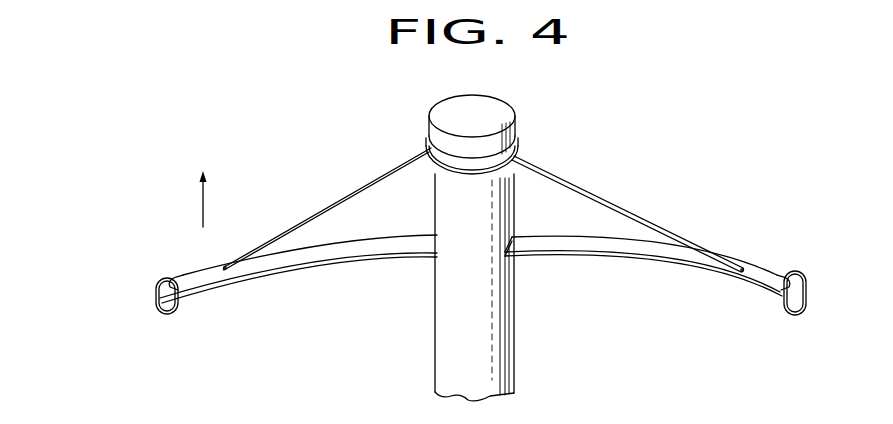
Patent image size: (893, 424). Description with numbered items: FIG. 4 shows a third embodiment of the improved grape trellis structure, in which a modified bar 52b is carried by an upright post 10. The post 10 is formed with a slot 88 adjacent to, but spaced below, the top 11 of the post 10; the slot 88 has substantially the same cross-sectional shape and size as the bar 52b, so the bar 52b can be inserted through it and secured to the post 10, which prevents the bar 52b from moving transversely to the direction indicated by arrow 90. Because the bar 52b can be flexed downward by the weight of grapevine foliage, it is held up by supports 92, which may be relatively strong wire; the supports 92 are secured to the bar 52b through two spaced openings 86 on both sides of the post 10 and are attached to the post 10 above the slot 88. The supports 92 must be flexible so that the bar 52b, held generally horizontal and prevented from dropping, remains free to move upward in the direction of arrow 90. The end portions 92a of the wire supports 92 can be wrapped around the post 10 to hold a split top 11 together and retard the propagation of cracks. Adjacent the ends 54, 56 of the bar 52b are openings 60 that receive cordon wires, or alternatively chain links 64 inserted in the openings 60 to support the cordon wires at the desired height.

The post 10 is at (502, 360).
The top 11 is at (487, 105).
The bar 52b is at (398, 264).
The end 54 is at (156, 283).
The end 56 is at (806, 280).
The opening 60 is at (177, 273).
The chain link 64 is at (479, 298).
The opening 86 is at (224, 264).
The slot 88 is at (512, 234).
The arrow 90 is at (200, 181).
The support 92 is at (382, 181).
The end portion 92a is at (461, 176).